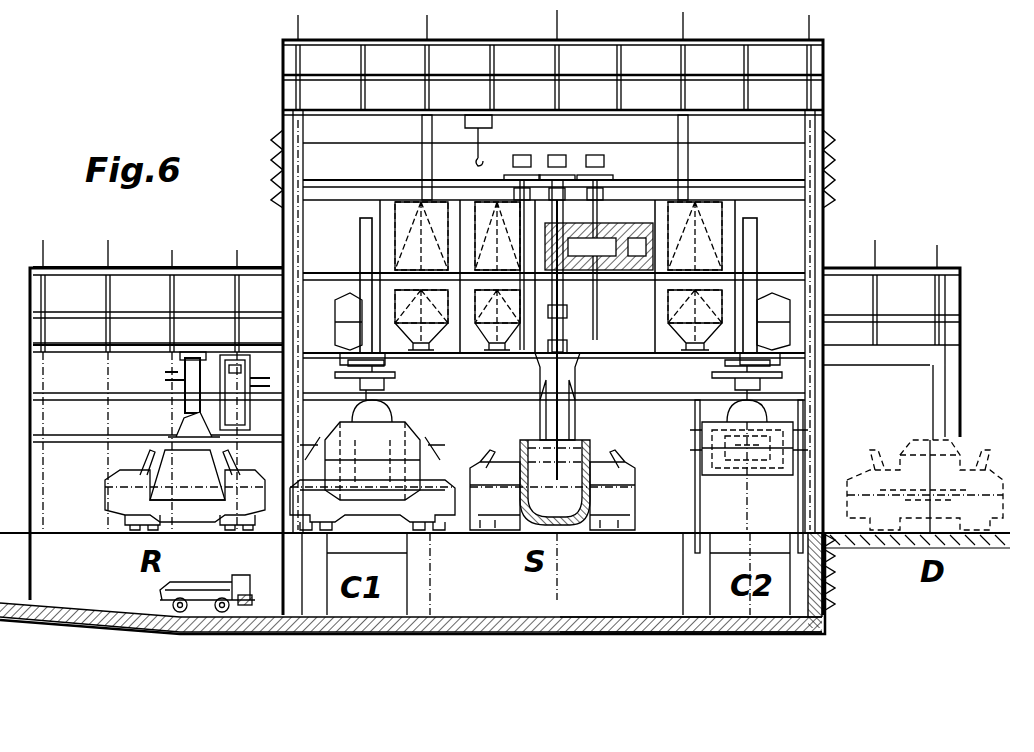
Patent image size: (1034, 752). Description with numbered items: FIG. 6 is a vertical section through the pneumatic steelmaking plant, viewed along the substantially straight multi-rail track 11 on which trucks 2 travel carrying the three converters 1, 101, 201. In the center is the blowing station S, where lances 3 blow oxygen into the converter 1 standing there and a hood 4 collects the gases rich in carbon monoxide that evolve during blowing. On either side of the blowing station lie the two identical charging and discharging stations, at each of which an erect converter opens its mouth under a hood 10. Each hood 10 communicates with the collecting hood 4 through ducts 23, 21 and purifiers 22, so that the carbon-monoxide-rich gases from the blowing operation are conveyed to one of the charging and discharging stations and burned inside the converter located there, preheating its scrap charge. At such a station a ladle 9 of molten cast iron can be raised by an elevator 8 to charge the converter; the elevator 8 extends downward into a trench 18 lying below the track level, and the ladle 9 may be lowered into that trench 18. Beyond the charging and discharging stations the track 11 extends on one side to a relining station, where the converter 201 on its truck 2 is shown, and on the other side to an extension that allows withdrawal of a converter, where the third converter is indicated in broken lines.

The converter 1 is at (568, 520).
The truck 2 is at (110, 480).
The lance 3 is at (520, 340).
The hood 4 is at (576, 420).
The elevator 8 is at (415, 468).
The ladle 9 is at (395, 405).
The hood 10 is at (362, 394).
The multi-rail track 11 is at (640, 530).
The trench 18 is at (642, 618).
The duct 21 is at (570, 336).
The purifier 22 is at (487, 330).
The duct 23 is at (352, 336).
The converter 101 is at (358, 508).
The converter 201 is at (180, 470).